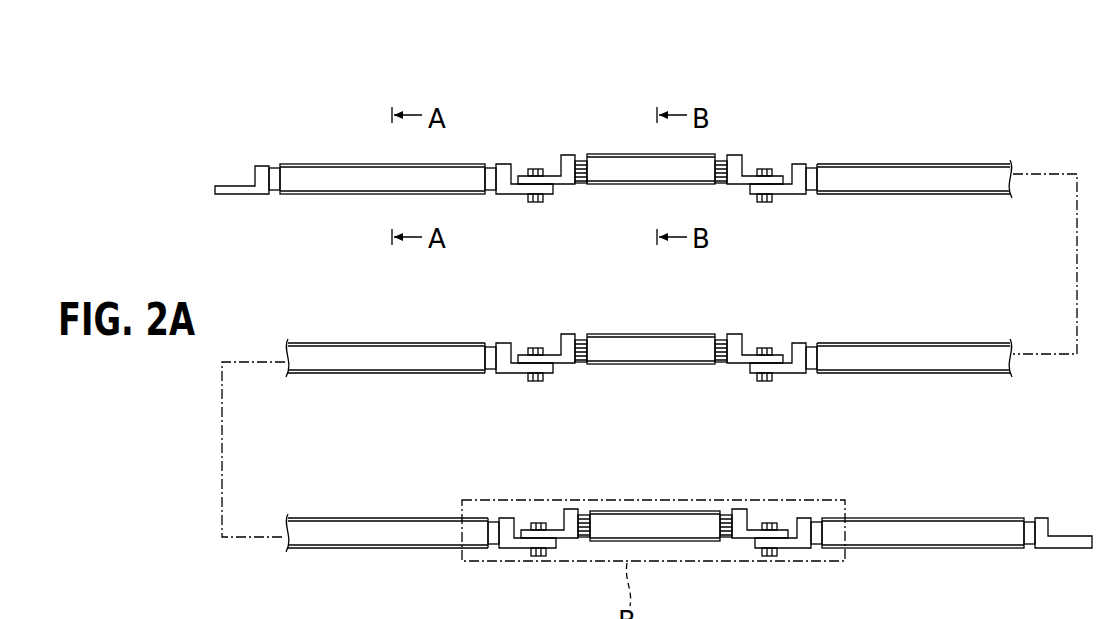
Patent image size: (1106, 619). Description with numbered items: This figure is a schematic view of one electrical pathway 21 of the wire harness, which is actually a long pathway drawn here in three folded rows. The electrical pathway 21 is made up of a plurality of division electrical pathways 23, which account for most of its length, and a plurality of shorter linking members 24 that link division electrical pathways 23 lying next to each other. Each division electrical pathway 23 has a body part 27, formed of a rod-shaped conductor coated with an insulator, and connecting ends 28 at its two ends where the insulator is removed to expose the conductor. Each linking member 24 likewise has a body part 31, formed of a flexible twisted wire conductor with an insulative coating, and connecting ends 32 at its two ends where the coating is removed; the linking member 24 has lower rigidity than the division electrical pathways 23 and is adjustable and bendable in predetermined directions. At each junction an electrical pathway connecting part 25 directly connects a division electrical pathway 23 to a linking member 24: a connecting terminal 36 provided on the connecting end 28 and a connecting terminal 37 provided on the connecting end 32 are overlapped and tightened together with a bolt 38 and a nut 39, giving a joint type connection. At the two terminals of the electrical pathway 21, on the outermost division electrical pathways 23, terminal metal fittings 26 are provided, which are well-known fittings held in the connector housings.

The electrical pathway 21 is at (984, 104).
The division electrical pathway 23 is at (651, 342).
The linking member 24 is at (649, 335).
The electrical pathway connecting part 25 is at (662, 328).
The terminal metal fitting 26 is at (240, 186).
The body part 27 is at (348, 190).
The connecting end 28 is at (277, 196).
The body part 31 is at (626, 180).
The connecting end 32 is at (580, 186).
The connecting terminal 36 is at (506, 162).
The connecting terminal 37 is at (568, 156).
The bolt 38 is at (536, 168).
The nut 39 is at (534, 204).